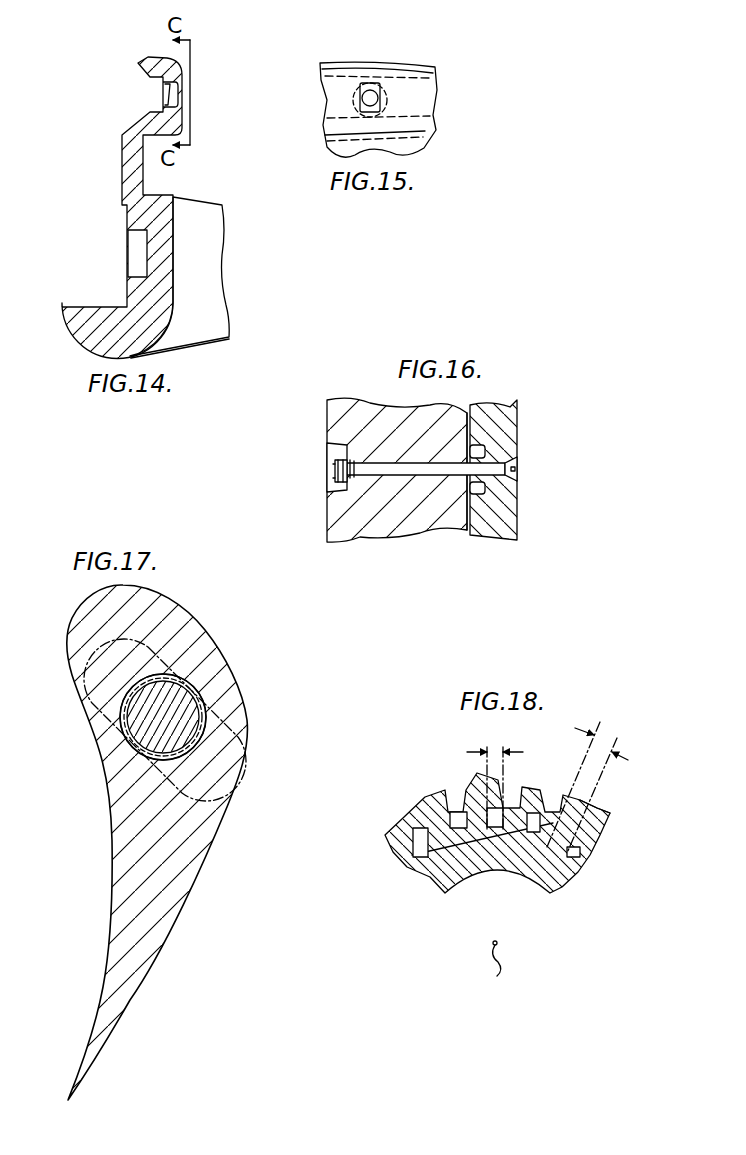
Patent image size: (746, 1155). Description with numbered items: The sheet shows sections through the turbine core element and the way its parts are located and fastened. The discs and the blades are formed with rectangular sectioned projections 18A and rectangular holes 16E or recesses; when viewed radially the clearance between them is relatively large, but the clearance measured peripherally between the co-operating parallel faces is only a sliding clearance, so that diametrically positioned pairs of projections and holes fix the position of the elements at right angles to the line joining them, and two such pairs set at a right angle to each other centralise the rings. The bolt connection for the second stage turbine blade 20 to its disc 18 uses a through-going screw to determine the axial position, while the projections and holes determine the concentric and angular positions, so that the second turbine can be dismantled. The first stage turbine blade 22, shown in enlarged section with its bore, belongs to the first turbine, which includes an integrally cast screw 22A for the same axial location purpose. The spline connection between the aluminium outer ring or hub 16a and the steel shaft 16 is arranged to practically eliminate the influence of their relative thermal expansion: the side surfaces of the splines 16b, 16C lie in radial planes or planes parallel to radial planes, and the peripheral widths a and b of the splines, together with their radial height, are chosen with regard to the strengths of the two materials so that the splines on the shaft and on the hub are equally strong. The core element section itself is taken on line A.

In FIG. 18, the steel shaft 16 is at (557, 877).
In FIG. 16, the outer ring or hub 16a is at (509, 523).
In FIG. 18, the outer ring or hub 16a is at (593, 822).
In FIG. 18, the spline 16b is at (583, 848).
In FIG. 18, the spline 16C is at (560, 822).
In FIG. 15, the rectangular hole 16E is at (391, 82).
In FIG. 16, the rectangular hole 16E is at (486, 460).
In FIG. 14, the disc 18 is at (200, 332).
In FIG. 16, the disc 18 is at (428, 515).
In FIG. 16, the rectangular sectioned projection 18A is at (513, 462).
In FIG. 14, the second stage turbine blade 20 is at (83, 333).
In FIG. 16, the second stage turbine blade 20 is at (350, 523).
In FIG. 17, the first stage turbine blade 22 is at (188, 862).
In FIG. 17, the integrally cast screw 22A is at (197, 722).
In FIG. 18, the peripheral width of spline a is at (501, 788).
In FIG. 18, the peripheral width of spline b is at (591, 781).
In FIG. 18, the section line A— A is at (501, 968).